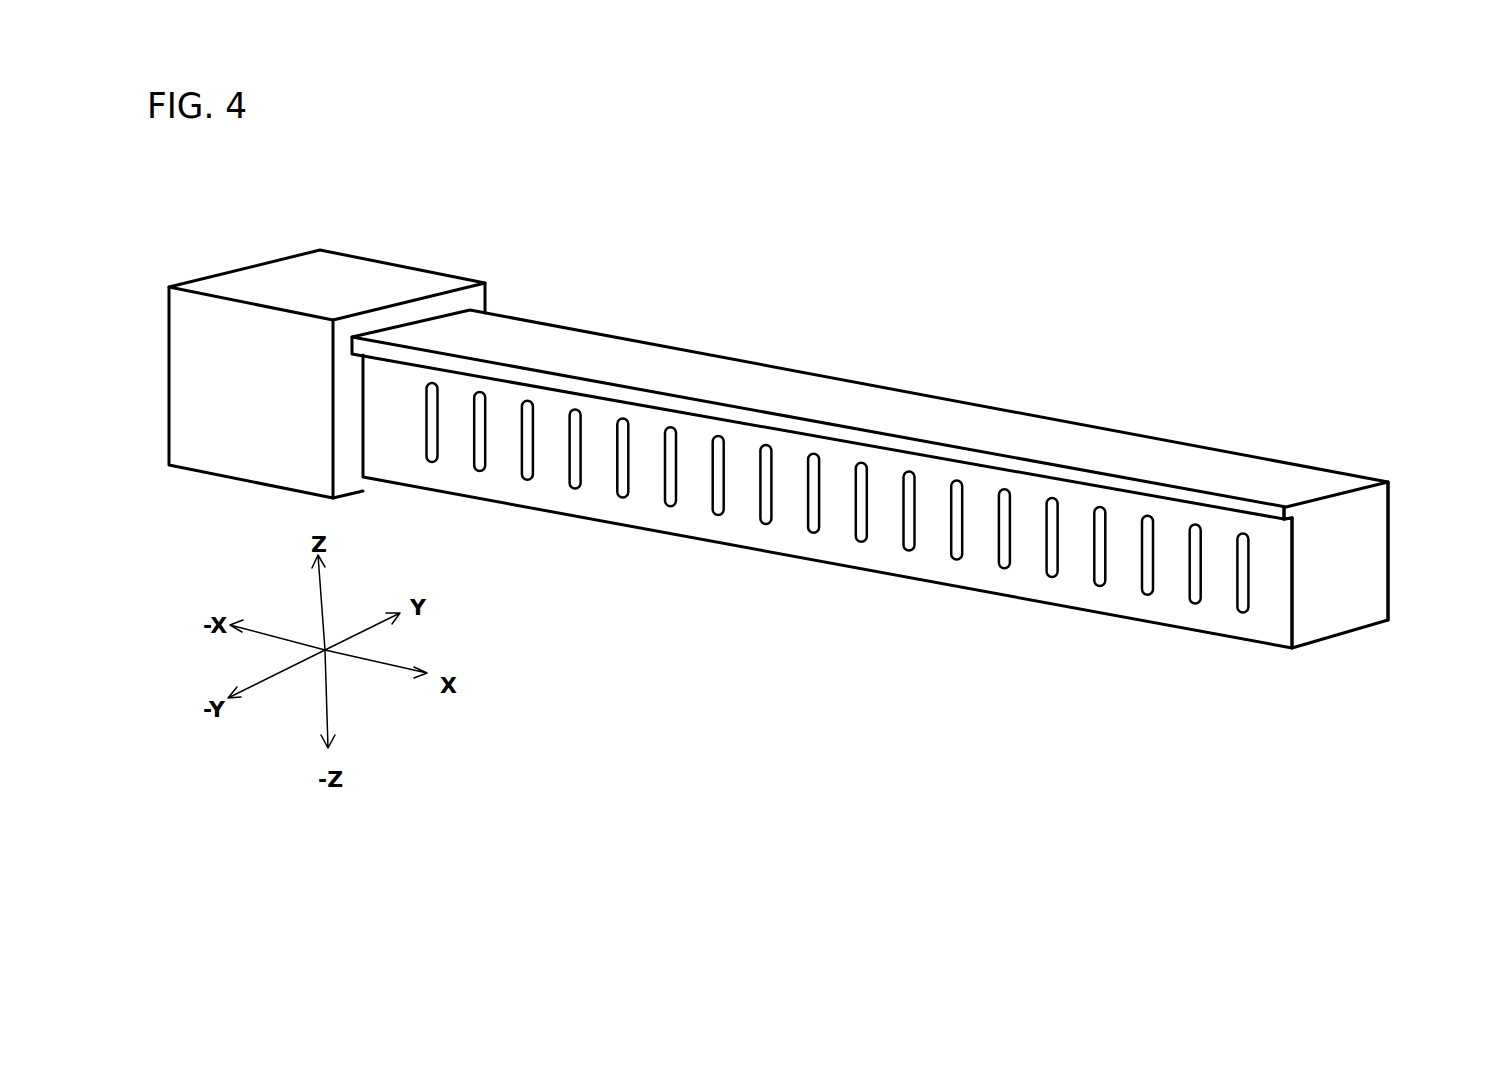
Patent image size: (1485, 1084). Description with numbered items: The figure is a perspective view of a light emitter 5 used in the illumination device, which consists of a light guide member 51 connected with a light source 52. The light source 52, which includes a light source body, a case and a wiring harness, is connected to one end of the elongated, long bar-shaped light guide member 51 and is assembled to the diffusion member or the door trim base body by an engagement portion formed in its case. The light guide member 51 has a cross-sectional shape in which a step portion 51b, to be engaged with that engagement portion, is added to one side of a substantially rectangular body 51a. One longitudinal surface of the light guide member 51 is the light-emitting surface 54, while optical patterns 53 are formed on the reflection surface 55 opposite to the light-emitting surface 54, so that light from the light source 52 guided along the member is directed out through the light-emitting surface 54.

The light emitter 5 is at (1083, 378).
The light guide member 51 is at (832, 395).
The substantially rectangular body 51a is at (1350, 523).
The step portion 51b is at (1295, 517).
The light source 52 is at (222, 450).
The optical patterns 53 is at (630, 470).
The light-emitting surface 54 is at (1390, 512).
The reflection surface 55 is at (942, 567).